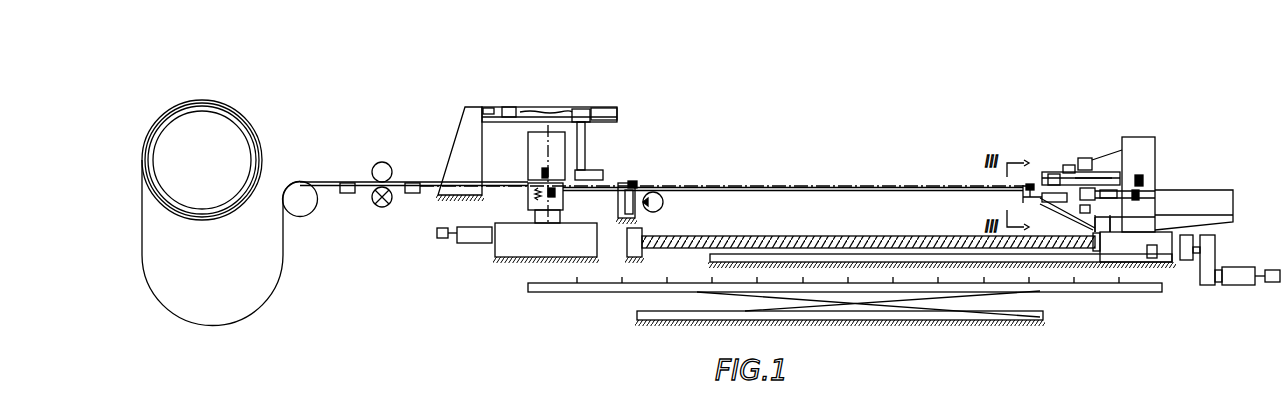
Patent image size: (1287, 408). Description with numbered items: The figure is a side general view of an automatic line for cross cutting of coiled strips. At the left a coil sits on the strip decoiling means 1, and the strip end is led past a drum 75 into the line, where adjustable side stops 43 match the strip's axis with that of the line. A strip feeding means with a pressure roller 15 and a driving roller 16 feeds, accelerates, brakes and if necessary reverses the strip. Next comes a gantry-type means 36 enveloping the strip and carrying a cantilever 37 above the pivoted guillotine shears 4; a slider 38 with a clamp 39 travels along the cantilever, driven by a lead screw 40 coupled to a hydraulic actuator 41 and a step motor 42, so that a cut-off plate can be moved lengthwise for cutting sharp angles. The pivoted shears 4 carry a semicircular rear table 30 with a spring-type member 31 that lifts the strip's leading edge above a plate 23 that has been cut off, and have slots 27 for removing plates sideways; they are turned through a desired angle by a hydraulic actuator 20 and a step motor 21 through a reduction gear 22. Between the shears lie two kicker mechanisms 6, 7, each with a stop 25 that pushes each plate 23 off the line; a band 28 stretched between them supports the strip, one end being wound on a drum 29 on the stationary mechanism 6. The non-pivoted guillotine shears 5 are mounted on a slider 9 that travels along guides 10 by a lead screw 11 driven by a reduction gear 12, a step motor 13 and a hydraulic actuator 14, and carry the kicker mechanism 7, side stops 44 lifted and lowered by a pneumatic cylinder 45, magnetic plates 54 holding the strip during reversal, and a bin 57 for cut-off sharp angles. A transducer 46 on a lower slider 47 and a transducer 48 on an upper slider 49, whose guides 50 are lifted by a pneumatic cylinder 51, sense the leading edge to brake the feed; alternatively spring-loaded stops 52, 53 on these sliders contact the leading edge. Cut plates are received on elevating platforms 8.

The strip decoiling means 1 is at (233, 137).
The drum 75 is at (302, 218).
The side stops 43 is at (341, 183).
The pressure roller 15 is at (378, 165).
The driving roller 16 is at (384, 208).
The gantry-type means 36 is at (458, 158).
The cantilever 37 is at (625, 95).
The slider 38 is at (579, 109).
The lead screw 40 is at (600, 107).
The hydraulic actuator 41 is at (508, 107).
The step motor 42 is at (486, 107).
The clamp 39 is at (592, 172).
The pivoted guillotine shears 4 is at (545, 150).
The spring-type member 31 is at (540, 180).
The semicircular rear table 30 is at (530, 195).
The slots 27 is at (560, 190).
The reduction gear 22 is at (515, 262).
The hydraulic actuator 20 is at (480, 243).
The step motor 21 is at (440, 240).
The kicker mechanism 6 is at (620, 220).
The stop 25 is at (636, 182).
The drum 29 is at (663, 204).
The band 28 is at (770, 186).
The plate 23 is at (879, 186).
The guides 10 is at (868, 242).
The lead screw 11 is at (904, 254).
The slider 9 is at (1156, 282).
The kicker mechanism 7 is at (1033, 217).
The elevating platforms 8 is at (1157, 297).
The non-pivoted guillotine shears 5 is at (1140, 137).
The transducer 48 is at (1052, 202).
The magnetic plates 54 is at (1055, 172).
The spring-loaded stop 53 is at (1070, 165).
The upper slider 49 is at (1070, 166).
The pneumatic cylinder 51 is at (1088, 158).
The transducer 46 is at (1095, 190).
The slider 47 is at (1092, 208).
The guides 50 is at (1117, 188).
The spring-loaded stop 52 is at (1145, 178).
The bin 57 is at (1228, 195).
The pneumatic cylinder 45 is at (1098, 215).
The side stops 44 is at (1109, 215).
The reduction gear 12 is at (1205, 285).
The hydraulic actuator 14 is at (1240, 267).
The step motor 13 is at (1273, 270).